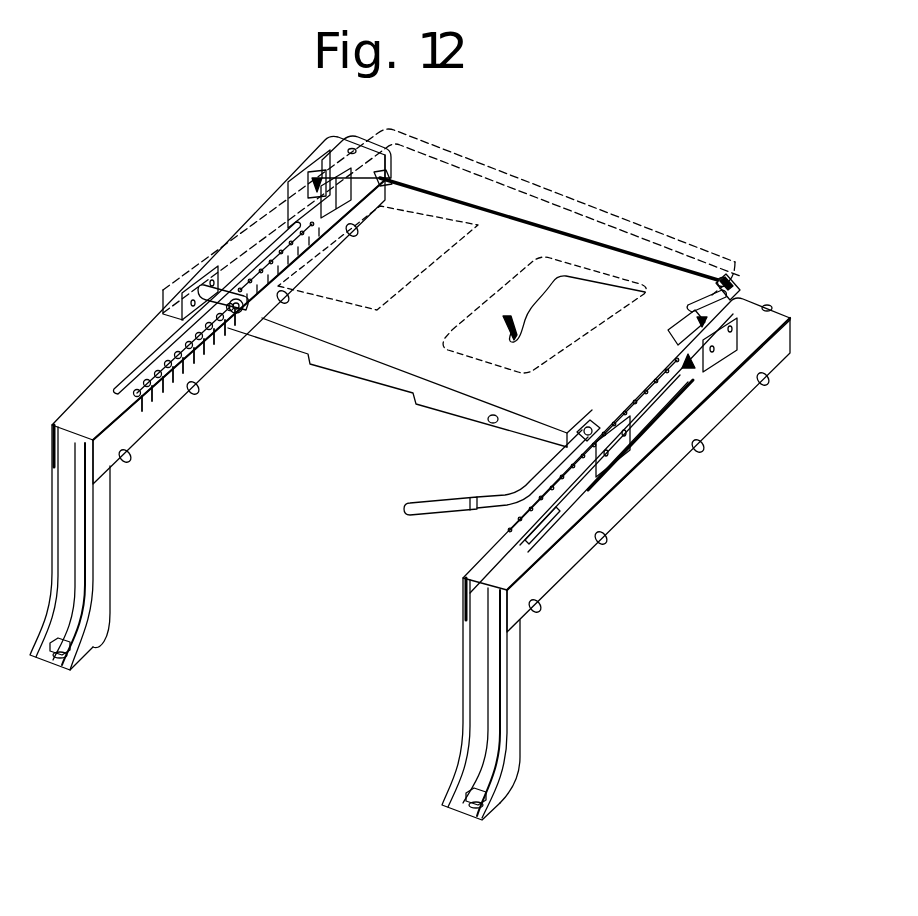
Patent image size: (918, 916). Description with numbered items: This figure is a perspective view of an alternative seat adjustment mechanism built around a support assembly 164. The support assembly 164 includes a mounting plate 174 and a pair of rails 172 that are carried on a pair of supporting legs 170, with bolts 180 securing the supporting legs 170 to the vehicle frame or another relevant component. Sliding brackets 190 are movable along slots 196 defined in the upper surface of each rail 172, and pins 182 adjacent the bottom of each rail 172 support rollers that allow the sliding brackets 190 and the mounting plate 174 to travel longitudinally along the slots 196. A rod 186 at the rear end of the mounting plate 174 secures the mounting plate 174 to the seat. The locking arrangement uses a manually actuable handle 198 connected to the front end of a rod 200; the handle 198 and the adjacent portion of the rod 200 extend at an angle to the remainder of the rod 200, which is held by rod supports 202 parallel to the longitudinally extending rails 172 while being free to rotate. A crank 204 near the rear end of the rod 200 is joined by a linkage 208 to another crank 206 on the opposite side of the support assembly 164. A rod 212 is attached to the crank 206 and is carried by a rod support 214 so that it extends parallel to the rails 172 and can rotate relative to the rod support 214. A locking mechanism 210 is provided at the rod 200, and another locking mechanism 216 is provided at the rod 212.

The support assembly 164 is at (712, 193).
The supporting legs 170 is at (107, 560).
The rails 172 is at (87, 415).
The mounting plate 174 is at (387, 338).
The bolts 180 is at (57, 667).
The pins 182 is at (130, 457).
The rod 186 is at (607, 217).
The sliding brackets 190 is at (323, 164).
The slots 196 is at (557, 513).
The handle 198 is at (427, 505).
The rod 200 is at (533, 482).
The rod supports 202 is at (587, 423).
The crank 204 is at (730, 275).
The crank 206 is at (390, 180).
The linkage 208 is at (513, 217).
The locking mechanism 210 is at (685, 377).
The rod 212 is at (273, 227).
The rod support 214 is at (240, 306).
The locking mechanism 216 is at (307, 172).